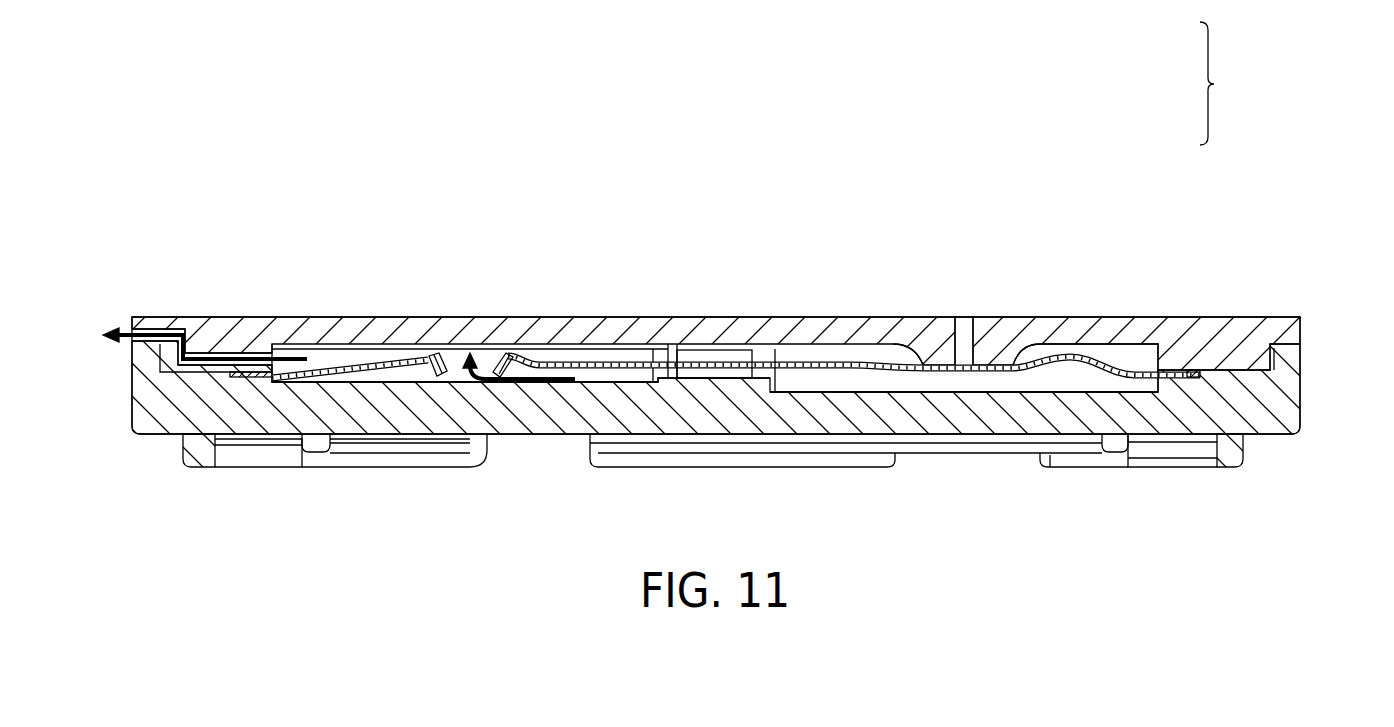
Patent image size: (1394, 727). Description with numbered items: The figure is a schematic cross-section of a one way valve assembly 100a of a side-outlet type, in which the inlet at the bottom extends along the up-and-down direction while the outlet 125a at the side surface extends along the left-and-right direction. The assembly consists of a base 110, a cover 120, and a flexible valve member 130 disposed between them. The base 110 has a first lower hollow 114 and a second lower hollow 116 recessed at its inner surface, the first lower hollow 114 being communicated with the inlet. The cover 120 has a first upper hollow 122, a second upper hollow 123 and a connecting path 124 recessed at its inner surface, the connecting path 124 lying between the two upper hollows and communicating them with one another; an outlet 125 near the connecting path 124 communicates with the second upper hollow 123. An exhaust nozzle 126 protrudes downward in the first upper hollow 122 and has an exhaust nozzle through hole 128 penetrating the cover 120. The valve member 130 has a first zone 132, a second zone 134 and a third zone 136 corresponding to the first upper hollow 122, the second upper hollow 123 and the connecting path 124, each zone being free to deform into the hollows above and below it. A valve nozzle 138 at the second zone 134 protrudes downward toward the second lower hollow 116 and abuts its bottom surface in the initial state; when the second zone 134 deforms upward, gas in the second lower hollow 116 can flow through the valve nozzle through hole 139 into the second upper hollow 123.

The one way valve assembly 100a is at (198, 135).
The base 110 is at (1283, 387).
The first lower hollow 114 is at (1140, 401).
The second lower hollow 116 is at (627, 385).
The cover 120 is at (1283, 330).
The first upper hollow 122 is at (1148, 348).
The second upper hollow 123 is at (330, 353).
The connecting path 124 is at (673, 353).
The outlet 125 is at (728, 373).
The outlet 125a is at (165, 322).
The exhaust nozzle 126 is at (1014, 344).
The exhaust nozzle through hole 128 is at (969, 326).
The valve member 130 is at (1228, 83).
The first zone 132 is at (1075, 355).
The second zone 134 is at (566, 360).
The third zone 136 is at (866, 225).
The valve nozzle 138 is at (500, 354).
The valve nozzle through hole 139 is at (455, 352).